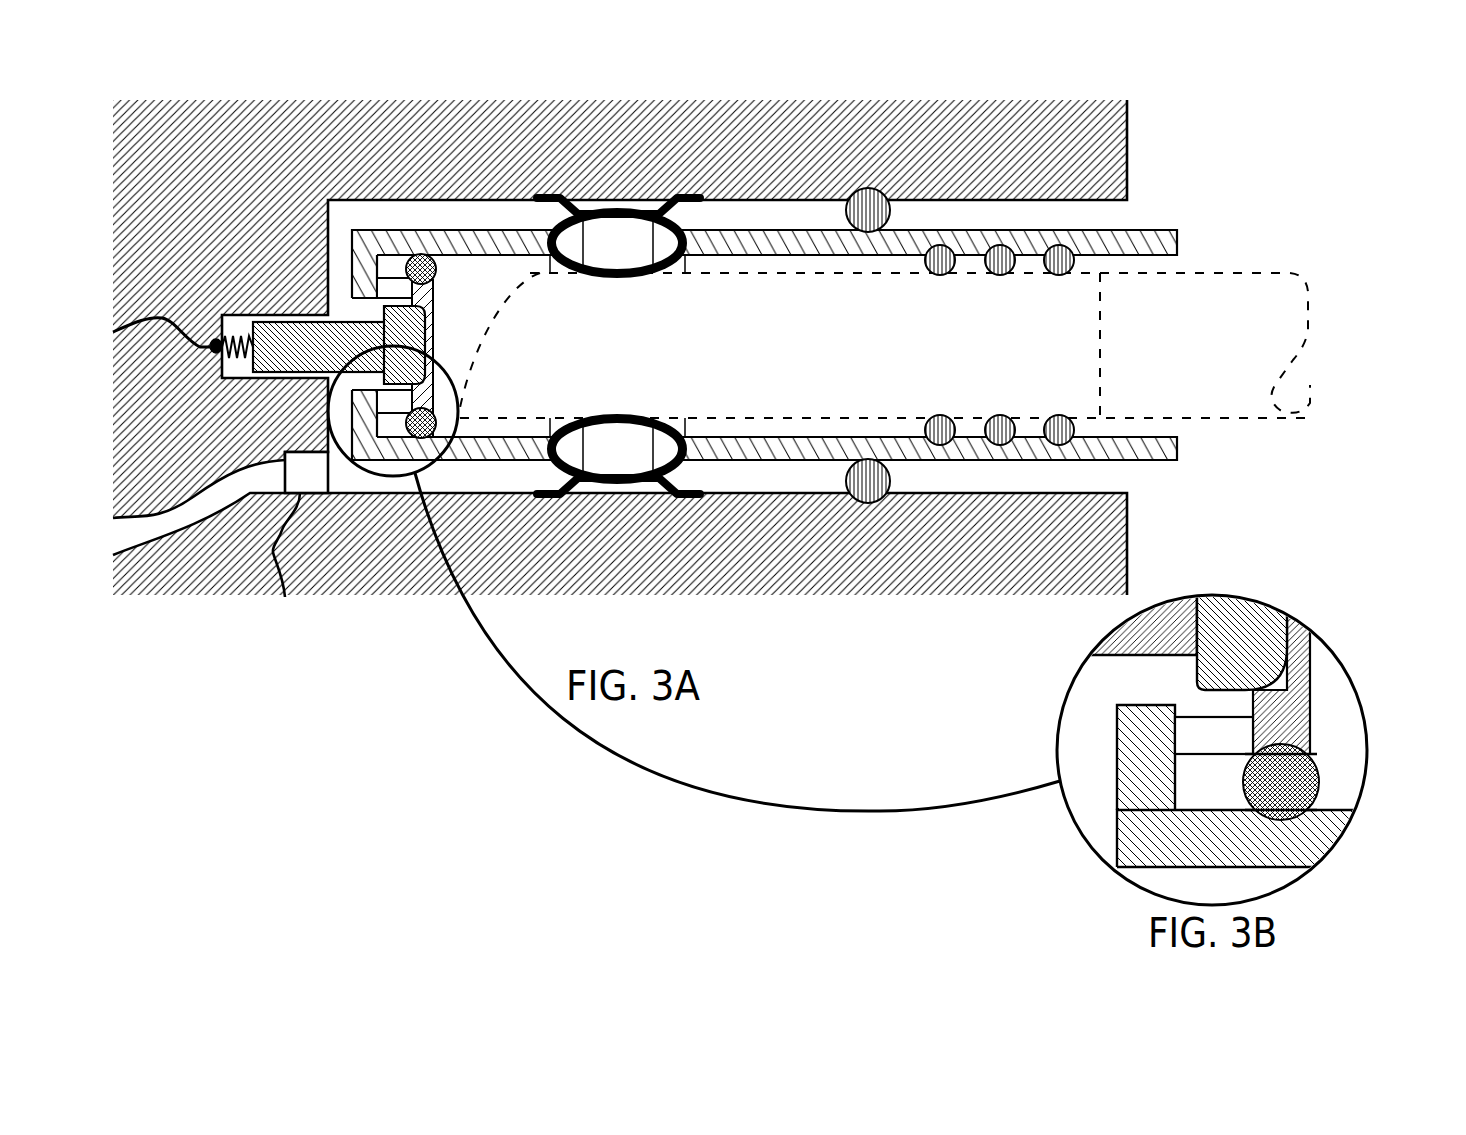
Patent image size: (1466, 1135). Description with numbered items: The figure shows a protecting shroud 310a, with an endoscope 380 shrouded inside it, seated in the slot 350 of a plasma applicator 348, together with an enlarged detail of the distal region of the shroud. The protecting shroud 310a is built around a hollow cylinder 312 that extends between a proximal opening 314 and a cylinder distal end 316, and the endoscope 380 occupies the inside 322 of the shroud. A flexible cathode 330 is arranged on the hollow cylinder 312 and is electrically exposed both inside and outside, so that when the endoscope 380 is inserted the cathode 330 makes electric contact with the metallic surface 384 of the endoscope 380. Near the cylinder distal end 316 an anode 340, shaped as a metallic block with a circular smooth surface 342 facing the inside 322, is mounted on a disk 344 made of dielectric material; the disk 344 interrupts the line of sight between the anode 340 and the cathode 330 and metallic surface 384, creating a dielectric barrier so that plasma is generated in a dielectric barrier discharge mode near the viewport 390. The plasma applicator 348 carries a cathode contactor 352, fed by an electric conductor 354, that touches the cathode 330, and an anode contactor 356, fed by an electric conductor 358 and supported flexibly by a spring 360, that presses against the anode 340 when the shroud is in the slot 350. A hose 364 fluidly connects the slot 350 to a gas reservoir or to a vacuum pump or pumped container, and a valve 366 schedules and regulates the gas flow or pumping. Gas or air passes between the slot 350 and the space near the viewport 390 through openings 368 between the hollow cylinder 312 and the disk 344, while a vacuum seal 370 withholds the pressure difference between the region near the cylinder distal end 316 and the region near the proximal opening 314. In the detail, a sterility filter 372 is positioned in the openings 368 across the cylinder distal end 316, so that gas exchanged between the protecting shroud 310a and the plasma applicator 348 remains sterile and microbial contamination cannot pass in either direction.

In FIG. 3A, the protecting shroud 310a is at (1178, 247).
In FIG. 3A, the hollow cylinder 312 is at (1153, 457).
In FIG. 3B, the hollow cylinder 312 is at (1317, 833).
In FIG. 3A, the proximal opening 314 is at (1167, 425).
In FIG. 3A, the cylinder distal end 316 is at (378, 251).
In FIG. 3A, the inside 322 is at (470, 273).
In FIG. 3A, the cathode 330 is at (618, 272).
In FIG. 3A, the anode 340 is at (383, 338).
In FIG. 3B, the anode 340 is at (1238, 610).
In FIG. 3B, the surface 342 is at (1300, 645).
In FIG. 3B, the disk 344 is at (1310, 723).
In FIG. 3A, the plasma applicator 348 is at (1122, 125).
In FIG. 3A, the slot 350 is at (1117, 217).
In FIG. 3A, the cathode contactor 352 is at (663, 197).
In FIG. 3A, the electric conductor 354 is at (672, 494).
In FIG. 3A, the anode contactor 356 is at (284, 328).
In FIG. 3B, the anode contactor 356 is at (1147, 657).
In FIG. 3A, the electric conductor 358 is at (157, 318).
In FIG. 3A, the spring 360 is at (246, 328).
In FIG. 3A, the hose 364 is at (177, 527).
In FIG. 3A, the valve 366 is at (317, 495).
In FIG. 3A, the openings 368 is at (391, 432).
In FIG. 3B, the openings 368 is at (1193, 783).
In FIG. 3A, the vacuum seal 370 is at (868, 190).
In FIG. 3B, the sterility filter 372 is at (1320, 782).
In FIG. 3A, the endoscope 380 is at (1300, 333).
In FIG. 3A, the metallic surface 384 is at (1087, 395).
In FIG. 3A, the viewport 390 is at (500, 317).